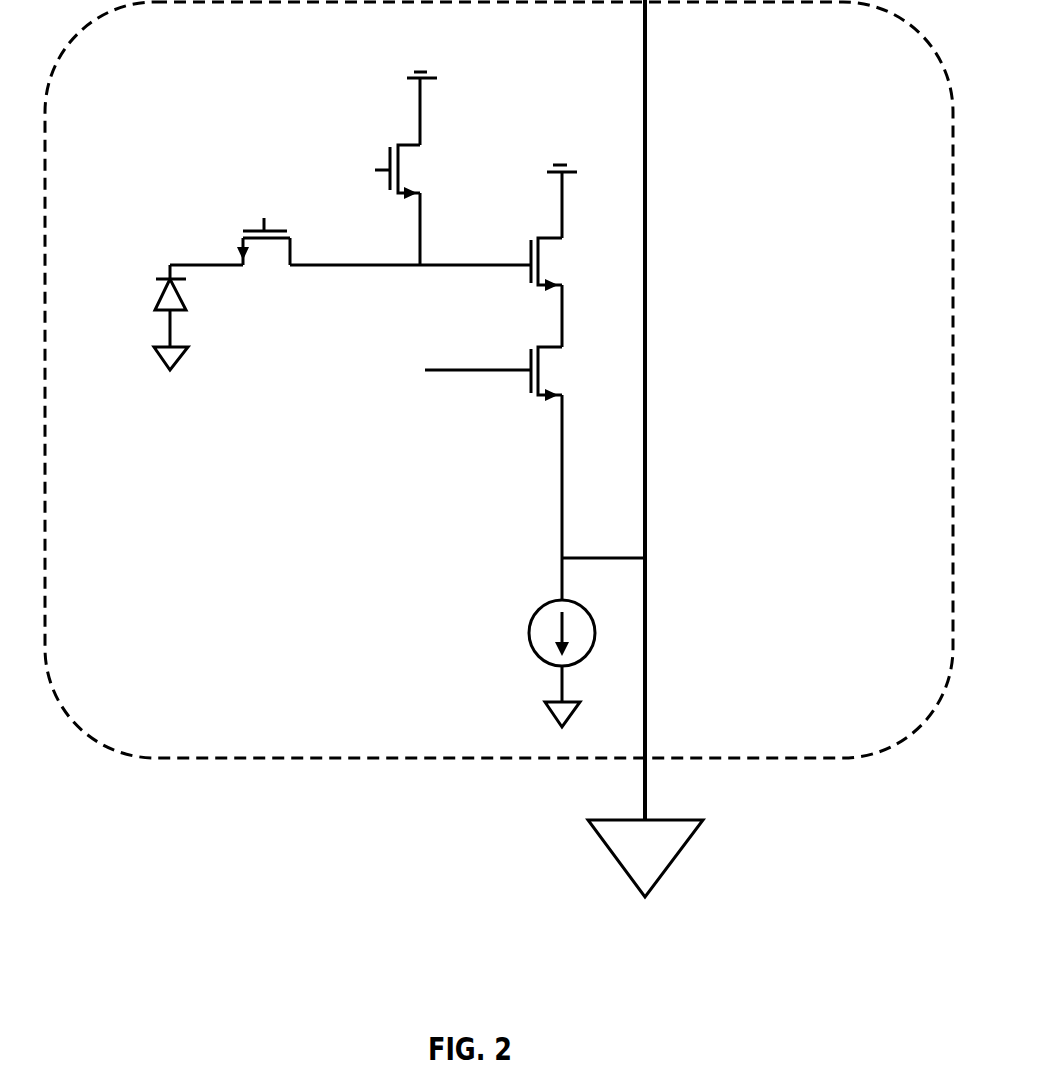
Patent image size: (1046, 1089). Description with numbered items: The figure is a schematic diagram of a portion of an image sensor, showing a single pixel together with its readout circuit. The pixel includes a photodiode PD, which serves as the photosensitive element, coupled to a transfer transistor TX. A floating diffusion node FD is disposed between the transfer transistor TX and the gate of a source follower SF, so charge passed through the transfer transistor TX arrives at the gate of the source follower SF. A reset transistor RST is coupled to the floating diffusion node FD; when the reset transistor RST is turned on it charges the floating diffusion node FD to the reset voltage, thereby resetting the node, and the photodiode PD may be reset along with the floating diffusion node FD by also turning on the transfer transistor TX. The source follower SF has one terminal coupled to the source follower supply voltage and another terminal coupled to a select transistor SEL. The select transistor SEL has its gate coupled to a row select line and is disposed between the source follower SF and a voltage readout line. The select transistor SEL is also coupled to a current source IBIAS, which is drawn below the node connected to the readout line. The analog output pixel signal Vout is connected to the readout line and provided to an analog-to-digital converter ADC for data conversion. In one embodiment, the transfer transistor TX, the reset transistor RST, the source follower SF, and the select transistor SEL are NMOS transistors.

The photodiode PD is at (142, 317).
The transfer transistor TX is at (263, 224).
The reset transistor RST is at (376, 202).
The floating diffusion node FD is at (350, 248).
The source follower SF is at (555, 292).
The select transistor SEL is at (520, 470).
The analog output pixel signal Vout is at (603, 544).
The current source IBIAS is at (522, 662).
The analog-to-digital converter ADC is at (645, 858).